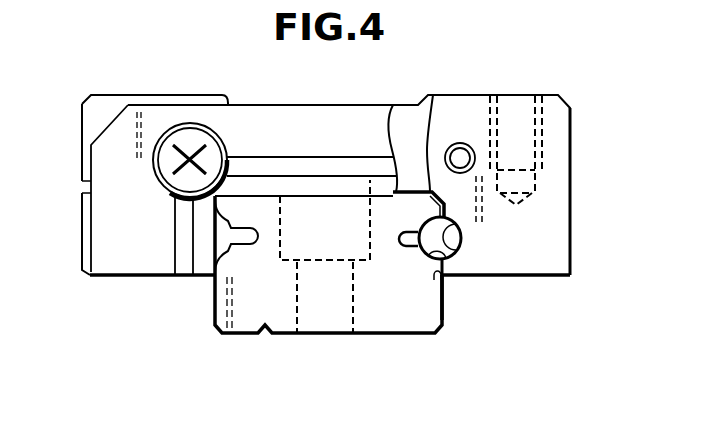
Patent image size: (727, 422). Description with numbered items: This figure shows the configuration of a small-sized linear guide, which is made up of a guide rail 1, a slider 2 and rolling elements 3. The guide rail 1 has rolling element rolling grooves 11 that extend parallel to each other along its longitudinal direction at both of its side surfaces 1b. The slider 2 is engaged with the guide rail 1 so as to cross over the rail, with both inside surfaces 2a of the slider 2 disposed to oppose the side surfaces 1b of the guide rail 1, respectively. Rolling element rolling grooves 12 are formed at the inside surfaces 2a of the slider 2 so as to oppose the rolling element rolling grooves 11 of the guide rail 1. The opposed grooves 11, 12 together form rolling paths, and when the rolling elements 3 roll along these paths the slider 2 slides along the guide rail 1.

The guide rail 1 is at (287, 335).
The side surfaces 1b is at (213, 313).
The slider 2 is at (310, 118).
The inside surfaces 2a is at (443, 288).
The rolling elements 3 is at (433, 97).
The rolling element rolling grooves 11 is at (436, 262).
The rolling element rolling grooves 12 is at (462, 233).